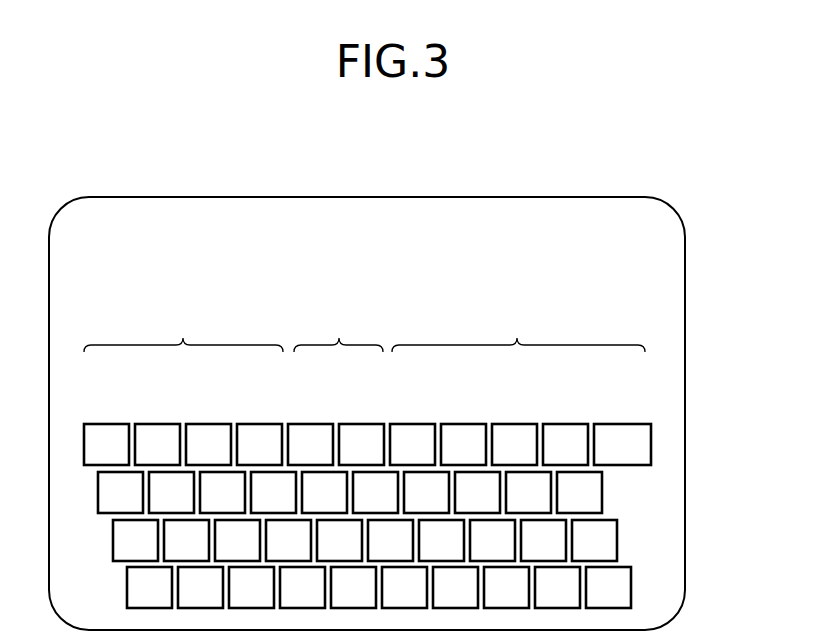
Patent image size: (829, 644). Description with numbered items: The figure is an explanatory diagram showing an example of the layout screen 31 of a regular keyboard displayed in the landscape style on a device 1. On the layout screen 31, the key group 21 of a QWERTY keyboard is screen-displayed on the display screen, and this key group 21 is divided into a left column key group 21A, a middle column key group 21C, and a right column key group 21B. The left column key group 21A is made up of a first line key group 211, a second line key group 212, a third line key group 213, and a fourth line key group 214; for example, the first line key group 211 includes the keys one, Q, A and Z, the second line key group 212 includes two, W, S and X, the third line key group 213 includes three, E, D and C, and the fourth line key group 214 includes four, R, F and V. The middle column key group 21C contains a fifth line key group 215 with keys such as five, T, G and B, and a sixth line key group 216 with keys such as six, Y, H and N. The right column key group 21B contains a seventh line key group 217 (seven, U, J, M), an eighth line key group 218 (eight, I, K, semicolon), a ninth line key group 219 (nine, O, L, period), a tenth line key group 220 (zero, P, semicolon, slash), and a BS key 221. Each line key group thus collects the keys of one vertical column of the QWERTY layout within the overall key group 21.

The information processing apparatus (input device) 1 is at (370, 195).
The key group 21 is at (650, 405).
The left column key group 21A is at (183, 389).
The right column key group 21B is at (520, 389).
The middle column key group 21C is at (336, 389).
The first line key group 211 is at (102, 422).
The second line key group 212 is at (154, 422).
The third line key group 213 is at (204, 422).
The fourth line key group 214 is at (256, 422).
The fifth line key group 215 is at (306, 422).
The sixth line key group 216 is at (358, 422).
The seventh line key group 217 is at (408, 422).
The eighth line key group 218 is at (460, 422).
The ninth line key group 219 is at (510, 422).
The tenth line key group 220 is at (562, 422).
The BS key 221 is at (617, 423).
The layout screen 31 is at (700, 507).